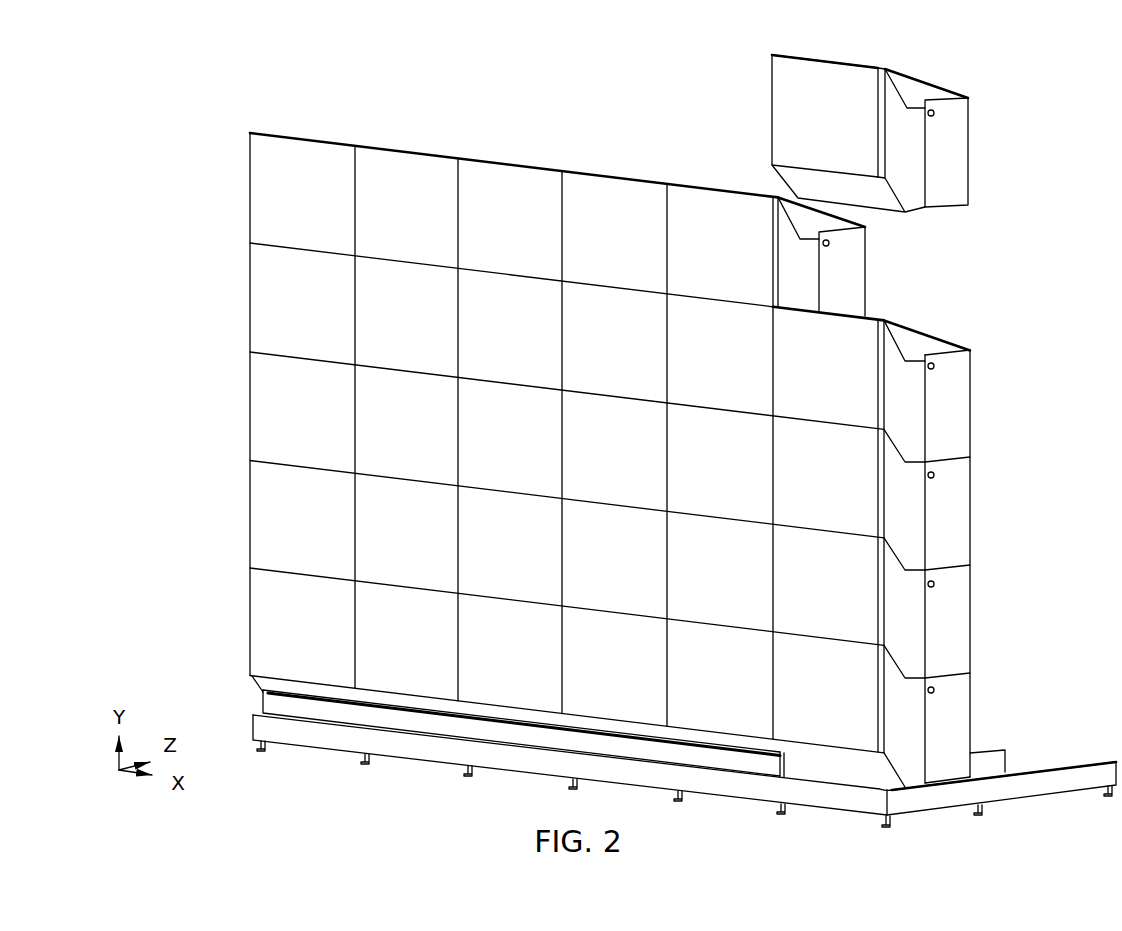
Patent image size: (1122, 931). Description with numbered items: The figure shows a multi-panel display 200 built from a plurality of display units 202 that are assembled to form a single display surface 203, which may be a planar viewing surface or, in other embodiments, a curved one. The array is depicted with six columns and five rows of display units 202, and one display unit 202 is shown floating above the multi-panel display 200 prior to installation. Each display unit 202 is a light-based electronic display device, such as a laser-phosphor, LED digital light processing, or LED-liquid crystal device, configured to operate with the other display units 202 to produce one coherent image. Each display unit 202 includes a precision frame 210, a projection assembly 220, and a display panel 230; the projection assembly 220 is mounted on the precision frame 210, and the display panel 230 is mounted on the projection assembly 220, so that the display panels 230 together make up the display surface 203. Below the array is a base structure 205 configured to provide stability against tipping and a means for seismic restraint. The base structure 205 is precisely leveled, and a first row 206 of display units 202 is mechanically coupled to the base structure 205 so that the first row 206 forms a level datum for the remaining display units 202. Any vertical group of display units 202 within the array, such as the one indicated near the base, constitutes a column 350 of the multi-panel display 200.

The multi-panel display 200 is at (204, 64).
The display unit 202 is at (308, 130).
The display surface 203 is at (492, 446).
The base structure 205 is at (297, 735).
The first row 206 is at (236, 567).
The precision frame 210 is at (929, 168).
The projection assembly 220 is at (781, 279).
The display panel 230 is at (798, 118).
The column 350 is at (363, 770).